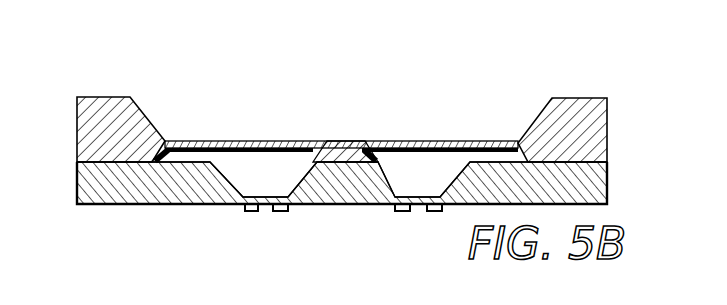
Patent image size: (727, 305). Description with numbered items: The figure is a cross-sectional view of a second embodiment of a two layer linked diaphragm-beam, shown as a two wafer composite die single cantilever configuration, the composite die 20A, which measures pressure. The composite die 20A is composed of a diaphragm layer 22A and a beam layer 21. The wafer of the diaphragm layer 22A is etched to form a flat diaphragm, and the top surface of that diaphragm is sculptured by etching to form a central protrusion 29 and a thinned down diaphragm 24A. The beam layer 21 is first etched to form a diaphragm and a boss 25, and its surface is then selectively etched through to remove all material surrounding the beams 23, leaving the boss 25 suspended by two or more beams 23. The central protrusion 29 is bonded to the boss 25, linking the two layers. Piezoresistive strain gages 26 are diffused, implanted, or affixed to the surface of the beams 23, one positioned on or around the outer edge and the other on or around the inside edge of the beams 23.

The composite die 20A is at (138, 82).
The beam layer 21 is at (143, 205).
The diaphragm layer 22A is at (565, 115).
The thinned down diaphragm 24A is at (242, 141).
The central protrusion 29 is at (332, 152).
The boss 25 is at (372, 187).
The beams 23 is at (263, 207).
The piezoresistive strain gages 26 is at (437, 207).